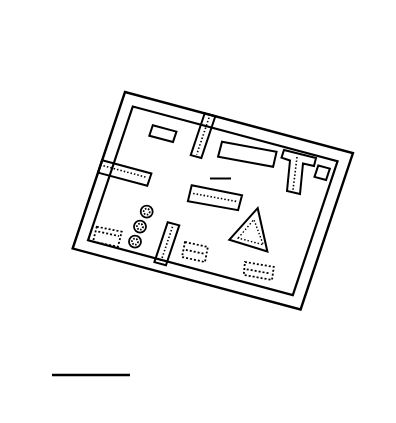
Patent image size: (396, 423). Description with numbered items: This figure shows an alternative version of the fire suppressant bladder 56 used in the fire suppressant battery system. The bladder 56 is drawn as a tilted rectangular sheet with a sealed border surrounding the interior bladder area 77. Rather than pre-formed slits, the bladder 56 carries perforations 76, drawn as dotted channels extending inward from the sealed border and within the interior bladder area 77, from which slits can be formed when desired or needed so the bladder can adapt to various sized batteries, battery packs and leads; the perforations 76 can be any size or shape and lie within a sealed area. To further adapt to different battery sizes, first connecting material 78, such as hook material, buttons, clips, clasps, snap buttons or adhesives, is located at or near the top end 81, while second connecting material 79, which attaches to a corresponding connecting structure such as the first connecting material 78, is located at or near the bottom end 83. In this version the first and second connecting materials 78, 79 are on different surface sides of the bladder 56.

The fire suppressant bladder 56 is at (96, 140).
The top end 81 is at (147, 99).
The bottom end 83 is at (86, 252).
The interior bladder area 77 is at (220, 169).
The first connecting material 78 is at (165, 126).
The perforations 76 is at (211, 122).
The second connecting material 79 is at (108, 246).